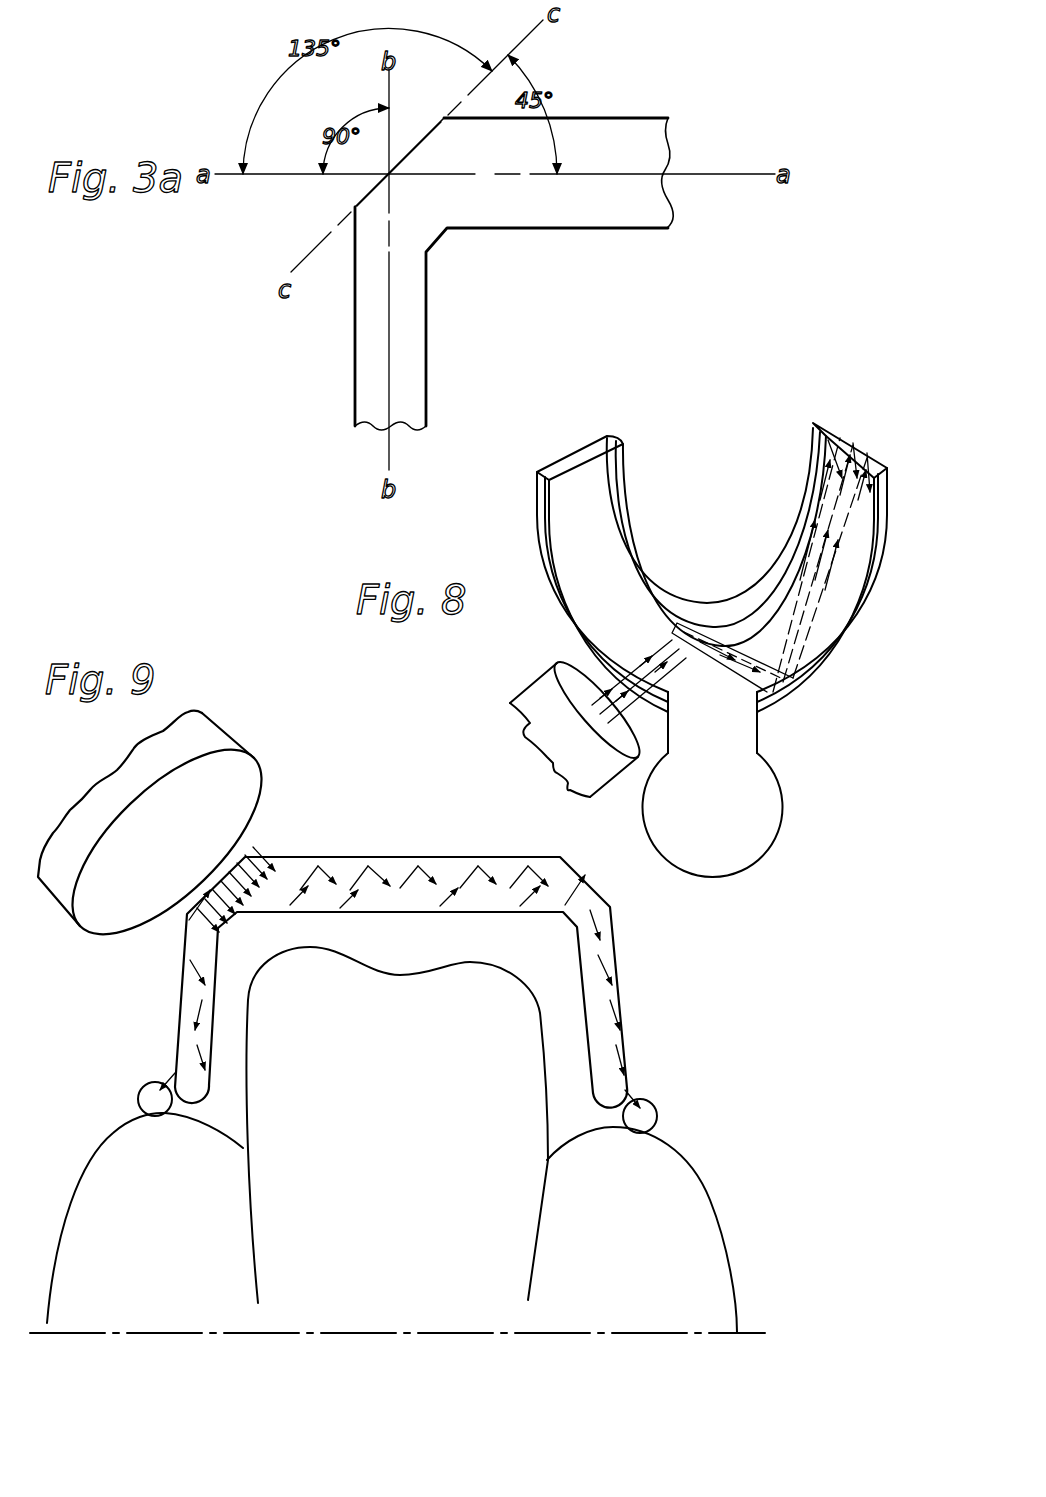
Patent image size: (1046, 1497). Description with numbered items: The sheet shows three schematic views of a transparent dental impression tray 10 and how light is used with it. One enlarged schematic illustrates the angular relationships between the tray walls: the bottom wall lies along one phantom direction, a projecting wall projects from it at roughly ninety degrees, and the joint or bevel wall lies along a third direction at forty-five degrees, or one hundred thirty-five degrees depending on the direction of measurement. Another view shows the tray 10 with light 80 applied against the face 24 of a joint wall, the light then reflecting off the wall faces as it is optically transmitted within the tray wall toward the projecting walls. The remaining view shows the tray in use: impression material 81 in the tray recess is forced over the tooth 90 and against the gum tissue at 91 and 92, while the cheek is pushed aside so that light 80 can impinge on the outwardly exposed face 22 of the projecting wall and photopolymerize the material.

In FIG. 8, the tray 10 is at (521, 548).
In FIG. 9, the face 22 is at (179, 1005).
In FIG. 8, the face 24 is at (584, 635).
In FIG. 8, the light 80 is at (531, 689).
In FIG. 9, the light 80 is at (231, 742).
In FIG. 9, the impression material 81 is at (148, 1098).
In FIG. 9, the tooth 90 is at (398, 1152).
In FIG. 9, the gum tissue 91 is at (166, 1239).
In FIG. 9, the gum tissue 92 is at (636, 1252).